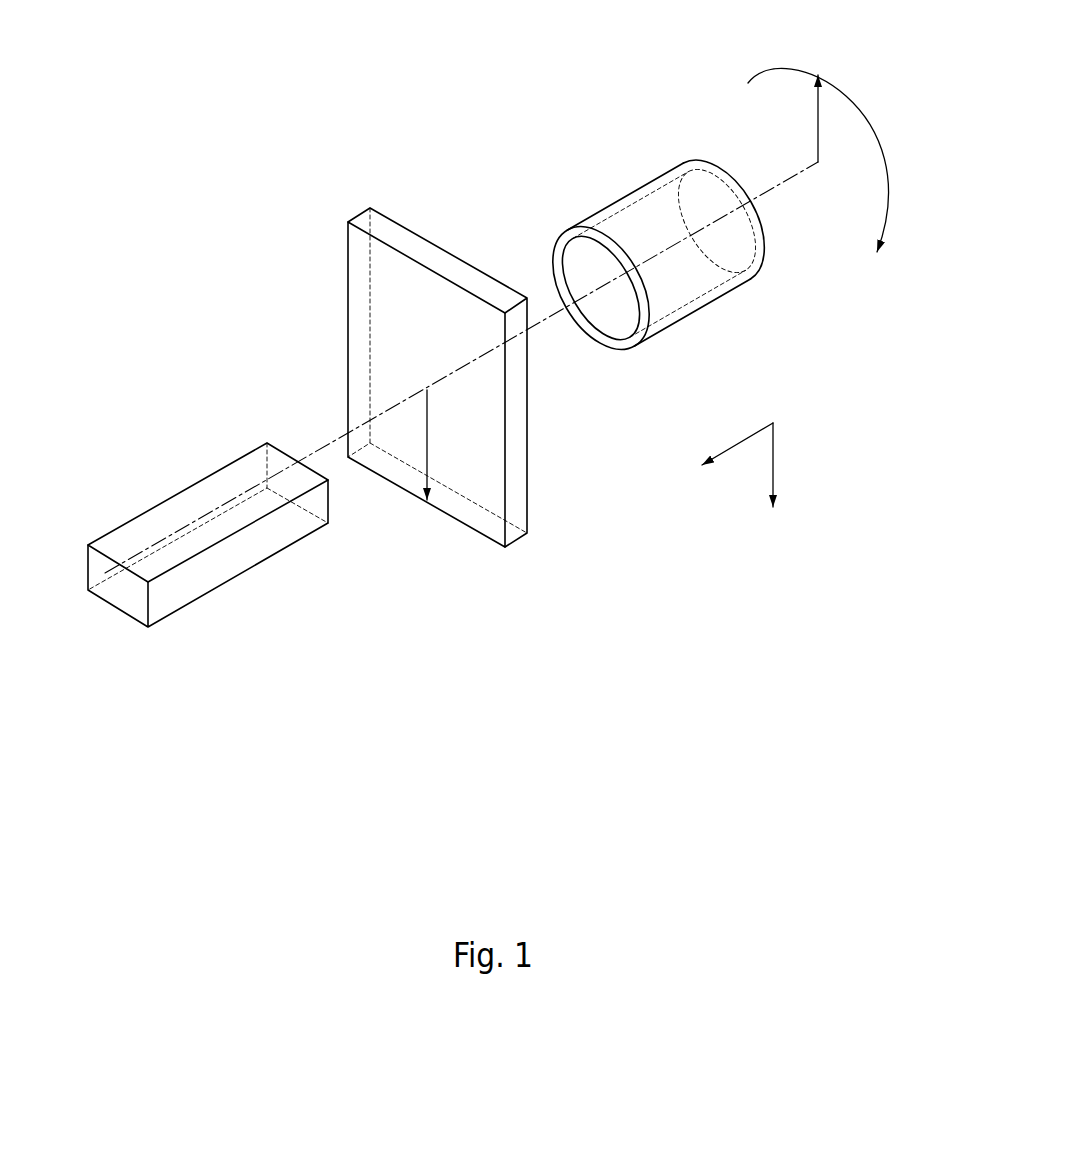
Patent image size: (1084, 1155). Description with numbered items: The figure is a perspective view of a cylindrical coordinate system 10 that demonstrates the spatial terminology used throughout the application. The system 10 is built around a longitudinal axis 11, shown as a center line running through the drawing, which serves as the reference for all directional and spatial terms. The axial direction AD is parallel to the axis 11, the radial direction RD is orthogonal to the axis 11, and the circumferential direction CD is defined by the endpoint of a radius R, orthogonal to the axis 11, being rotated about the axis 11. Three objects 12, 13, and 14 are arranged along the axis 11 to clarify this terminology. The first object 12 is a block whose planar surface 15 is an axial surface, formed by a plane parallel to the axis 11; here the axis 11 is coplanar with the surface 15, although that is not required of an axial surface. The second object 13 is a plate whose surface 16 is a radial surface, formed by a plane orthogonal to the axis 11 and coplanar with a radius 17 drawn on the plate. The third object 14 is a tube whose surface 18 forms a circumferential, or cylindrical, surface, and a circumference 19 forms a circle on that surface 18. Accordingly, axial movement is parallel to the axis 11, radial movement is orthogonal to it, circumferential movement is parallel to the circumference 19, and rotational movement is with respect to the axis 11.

The cylindrical coordinate system 10 is at (303, 257).
The longitudinal axis 11 is at (758, 200).
The object 12 is at (208, 560).
The object 13 is at (435, 399).
The object 14 is at (617, 260).
The axial surface 15 is at (170, 517).
The radial surface 16 is at (363, 335).
The radius 17 is at (427, 437).
The circumferential surface 18 is at (628, 192).
The circumference 19 is at (553, 248).
The radius R is at (818, 110).
The circumferential direction CD is at (855, 100).
The axial direction AD is at (737, 443).
The radial direction RD is at (773, 462).